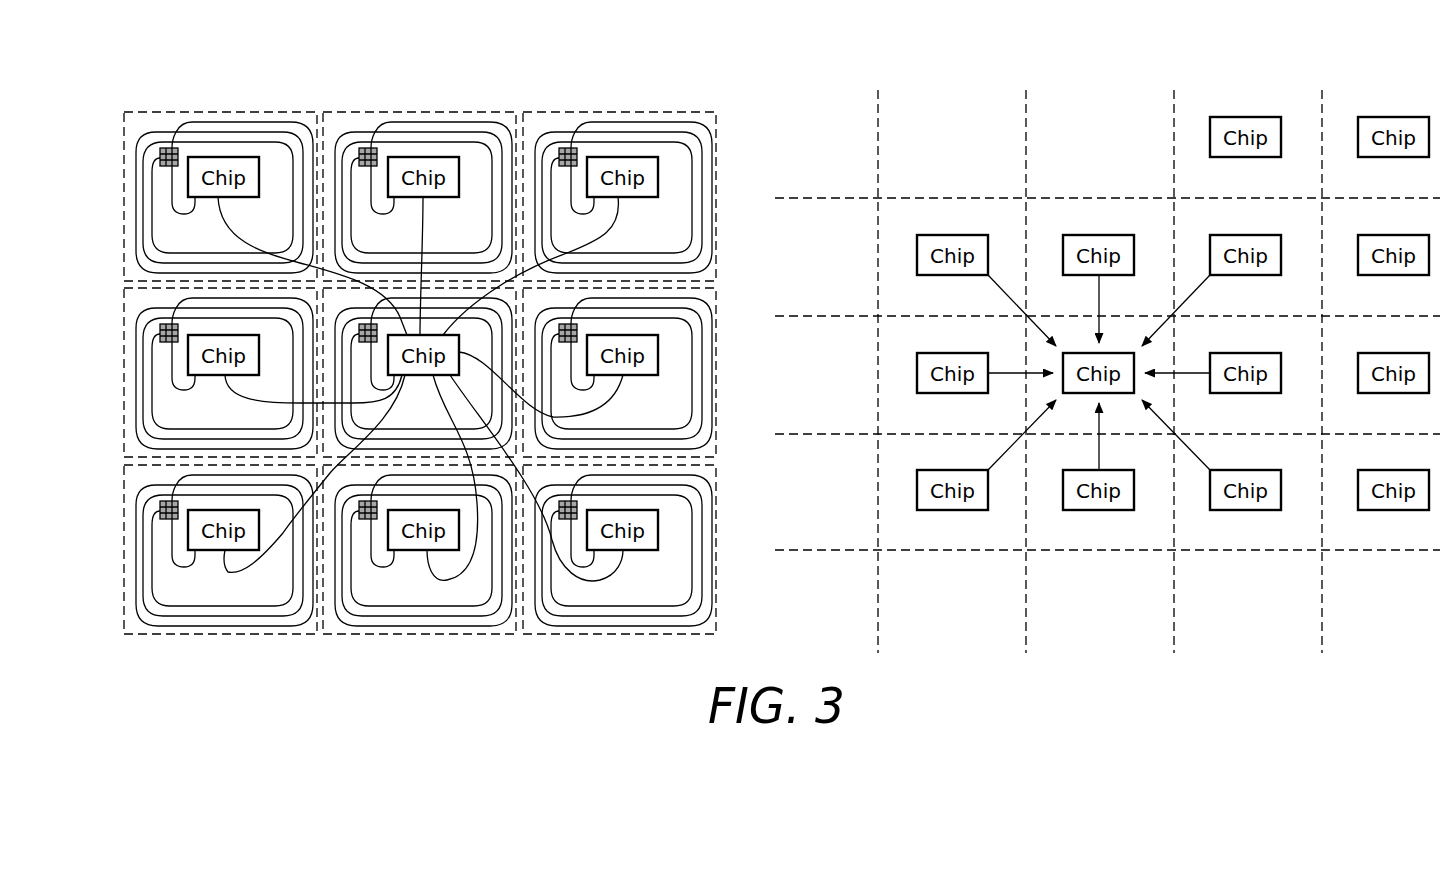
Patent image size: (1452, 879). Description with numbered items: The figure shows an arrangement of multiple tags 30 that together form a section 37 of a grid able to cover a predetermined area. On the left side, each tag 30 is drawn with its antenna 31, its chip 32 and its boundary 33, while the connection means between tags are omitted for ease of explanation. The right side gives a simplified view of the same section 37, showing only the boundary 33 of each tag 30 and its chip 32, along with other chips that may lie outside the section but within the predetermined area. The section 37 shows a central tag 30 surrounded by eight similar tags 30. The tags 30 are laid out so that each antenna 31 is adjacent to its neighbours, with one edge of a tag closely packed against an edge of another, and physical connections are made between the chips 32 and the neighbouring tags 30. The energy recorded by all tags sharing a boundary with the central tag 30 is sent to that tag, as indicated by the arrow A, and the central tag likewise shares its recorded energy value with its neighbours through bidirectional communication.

The tag 30 is at (140, 103).
The antenna 31 is at (213, 120).
The chip 32 is at (430, 335).
The boundary 33 is at (553, 110).
The section 37 is at (798, 71).
The arrow A is at (1046, 333).